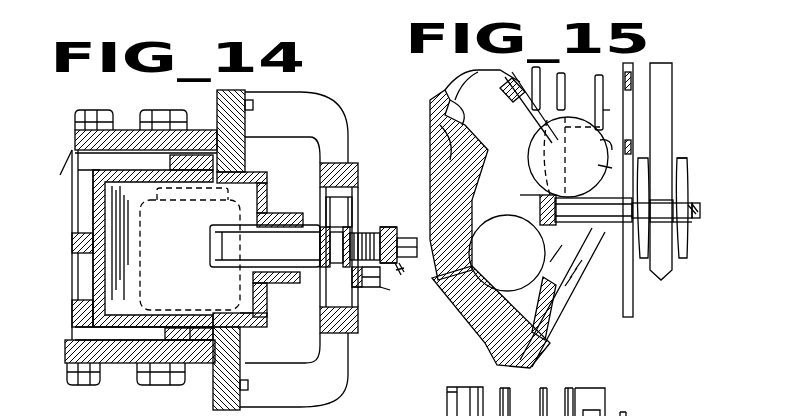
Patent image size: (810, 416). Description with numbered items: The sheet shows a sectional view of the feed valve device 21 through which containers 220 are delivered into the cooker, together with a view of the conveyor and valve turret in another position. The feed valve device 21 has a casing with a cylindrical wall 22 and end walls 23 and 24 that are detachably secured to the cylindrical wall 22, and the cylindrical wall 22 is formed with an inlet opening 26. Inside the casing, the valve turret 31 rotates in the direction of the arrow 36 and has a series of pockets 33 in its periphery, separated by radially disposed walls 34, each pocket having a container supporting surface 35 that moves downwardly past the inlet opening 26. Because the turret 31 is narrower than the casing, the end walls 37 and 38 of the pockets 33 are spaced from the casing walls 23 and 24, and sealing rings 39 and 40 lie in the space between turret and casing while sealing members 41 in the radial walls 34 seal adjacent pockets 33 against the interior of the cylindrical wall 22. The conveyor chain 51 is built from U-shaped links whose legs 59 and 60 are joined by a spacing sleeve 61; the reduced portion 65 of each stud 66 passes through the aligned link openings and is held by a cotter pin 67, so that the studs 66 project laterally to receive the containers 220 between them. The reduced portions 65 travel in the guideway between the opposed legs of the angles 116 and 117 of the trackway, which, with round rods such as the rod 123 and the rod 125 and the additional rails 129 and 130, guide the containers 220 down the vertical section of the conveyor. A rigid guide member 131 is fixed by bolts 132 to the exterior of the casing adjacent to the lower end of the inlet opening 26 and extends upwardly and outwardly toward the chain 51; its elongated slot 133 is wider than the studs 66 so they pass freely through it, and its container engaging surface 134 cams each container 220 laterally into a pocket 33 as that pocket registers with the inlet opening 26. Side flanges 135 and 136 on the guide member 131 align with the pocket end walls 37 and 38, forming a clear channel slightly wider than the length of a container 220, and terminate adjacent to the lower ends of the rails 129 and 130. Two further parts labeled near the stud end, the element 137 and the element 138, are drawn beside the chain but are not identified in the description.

In FIG. 14, the feed valve device 21 is at (75, 137).
In FIG. 14, the cylindrical wall 22 is at (247, 137).
In FIG. 14, the end wall 23 is at (128, 130).
In FIG. 14, the end wall 24 is at (120, 365).
In FIG. 14, the inlet port or opening 26 is at (238, 320).
In FIG. 15, the inlet port or opening 26 is at (533, 77).
In FIG. 14, the valve turret 31 is at (93, 188).
In FIG. 15, the valve turret 31 is at (440, 152).
In FIG. 14, the pockets 33 is at (97, 290).
In FIG. 15, the pockets 33 is at (448, 110).
In FIG. 15, the radially disposed walls 34 is at (442, 196).
In FIG. 14, the container supporting surface 35 is at (125, 233).
In FIG. 15, the container supporting surface 35 is at (522, 197).
In FIG. 15, the arrow 36 is at (517, 151).
In FIG. 14, the end wall of pocket 37 is at (152, 155).
In FIG. 15, the end wall of pocket 37 is at (478, 76).
In FIG. 14, the end wall of pocket 38 is at (165, 332).
In FIG. 14, the sealing ring 39 is at (215, 131).
In FIG. 14, the sealing ring 40 is at (208, 343).
In FIG. 15, the sealing members 41 is at (505, 85).
In FIG. 14, the chain 51 is at (378, 280).
In FIG. 15, the chain 51 is at (687, 180).
In FIG. 14, the side member or leg 59 is at (339, 212).
In FIG. 15, the side member or leg 59 is at (588, 410).
In FIG. 14, the side member or leg 60 is at (380, 234).
In FIG. 15, the side member or leg 60 is at (683, 165).
In FIG. 14, the cross member or spacing sleeve 61 is at (366, 233).
In FIG. 15, the cross member or spacing sleeve 61 is at (675, 224).
In FIG. 14, the reduced portion 65 is at (408, 250).
In FIG. 15, the reduced portion 65 is at (700, 211).
In FIG. 14, the stud or pin 66 is at (232, 240).
In FIG. 15, the stud or pin 66 is at (590, 224).
In FIG. 14, the cotter pins 67 is at (404, 271).
In FIG. 15, the cotter pins 67 is at (697, 208).
In FIG. 14, the angle 116 is at (358, 192).
In FIG. 15, the angle 116 is at (672, 92).
In FIG. 14, the angle 117 is at (360, 300).
In FIG. 15, the rod 123 is at (640, 68).
In FIG. 15, the rod 125 is at (540, 78).
In FIG. 15, the additional rod or rail 129 is at (600, 77).
In FIG. 15, the additional rod or rail 130 is at (565, 80).
In FIG. 14, the guide member 131 is at (268, 302).
In FIG. 15, the guide member 131 is at (566, 286).
In FIG. 15, the bolts 132 is at (552, 333).
In FIG. 14, the elongated slot 133 is at (305, 225).
In FIG. 15, the elongated slot 133 is at (608, 170).
In FIG. 14, the container engaging surface 134 is at (267, 193).
In FIG. 15, the container engaging surface 134 is at (608, 146).
In FIG. 14, the side flange 135 is at (238, 172).
In FIG. 15, the side flange 135 is at (605, 112).
In FIG. 14, the side flange 136 is at (268, 312).
In FIG. 14, the nut 137 is at (388, 227).
In FIG. 15, the nut 137 is at (685, 158).
In FIG. 14, the bracket edge 138 is at (390, 290).
In FIG. 14, the containers 220 is at (136, 275).